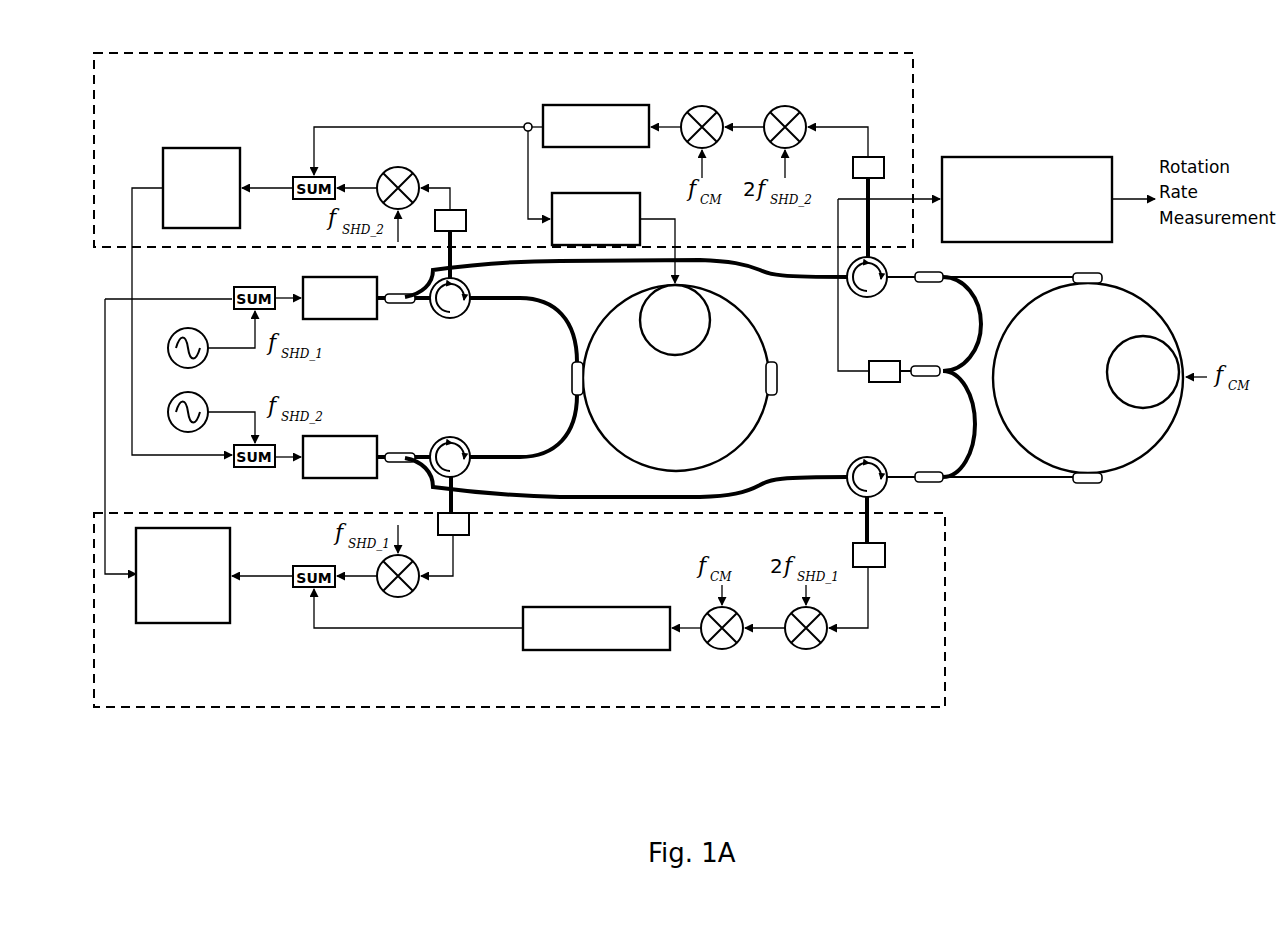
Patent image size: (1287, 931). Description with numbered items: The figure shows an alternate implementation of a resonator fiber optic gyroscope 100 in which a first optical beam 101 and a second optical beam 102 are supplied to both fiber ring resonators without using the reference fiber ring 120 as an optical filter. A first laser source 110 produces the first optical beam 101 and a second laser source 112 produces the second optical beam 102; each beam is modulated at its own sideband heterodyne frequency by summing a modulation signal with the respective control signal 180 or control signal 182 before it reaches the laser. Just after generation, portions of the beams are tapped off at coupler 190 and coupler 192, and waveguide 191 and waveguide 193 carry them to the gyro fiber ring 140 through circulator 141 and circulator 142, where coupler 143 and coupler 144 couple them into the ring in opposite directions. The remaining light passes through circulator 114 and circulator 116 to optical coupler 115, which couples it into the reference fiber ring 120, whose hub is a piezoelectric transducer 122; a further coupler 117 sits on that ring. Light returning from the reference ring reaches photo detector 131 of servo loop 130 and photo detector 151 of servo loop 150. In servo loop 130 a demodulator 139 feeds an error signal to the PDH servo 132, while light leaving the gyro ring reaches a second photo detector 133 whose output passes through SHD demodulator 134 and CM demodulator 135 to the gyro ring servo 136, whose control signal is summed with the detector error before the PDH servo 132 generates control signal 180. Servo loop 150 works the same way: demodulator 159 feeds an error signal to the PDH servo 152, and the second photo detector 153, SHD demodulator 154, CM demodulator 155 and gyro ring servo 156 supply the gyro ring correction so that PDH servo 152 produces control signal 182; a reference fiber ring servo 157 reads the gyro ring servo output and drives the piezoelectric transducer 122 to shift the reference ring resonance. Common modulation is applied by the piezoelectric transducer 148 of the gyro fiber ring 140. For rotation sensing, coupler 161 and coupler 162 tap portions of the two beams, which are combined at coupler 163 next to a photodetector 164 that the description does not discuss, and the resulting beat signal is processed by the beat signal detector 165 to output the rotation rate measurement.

The resonator fiber optic gyroscope 100 is at (1124, 96).
The first optical beam 101 is at (1165, 302).
The second optical beam 102 is at (1140, 435).
The first laser source 110 is at (338, 320).
The second laser source 112 is at (340, 432).
The circulator 114 is at (455, 320).
The optical coupler 115 is at (570, 381).
The circulator 116 is at (455, 440).
The additional optical coupler 117 is at (765, 380).
The reference fiber ring 120 is at (675, 471).
The piezoelectric transducer 122 is at (675, 320).
The servo loop 130 is at (519, 610).
The photo detector 131 is at (470, 525).
The PDH servo 132 is at (232, 553).
The second photo detector 133 is at (886, 555).
The SHD demodulator 134 is at (806, 650).
The CM demodulator 135 is at (722, 650).
The gyro ring servo 136 is at (597, 651).
The demodulator 139 is at (400, 598).
The gyro fiber ring 140 is at (1155, 447).
The circulator 141 is at (878, 298).
The circulator 142 is at (872, 456).
The coupler 143 is at (1090, 272).
The coupler 144 is at (1090, 484).
The piezoelectric transducer 148 is at (1143, 372).
The servo loop 150 is at (503, 150).
The photo detector 151 is at (466, 220).
The PDH servo 152 is at (197, 148).
The second photo detector 153 is at (884, 165).
The SHD demodulator 154 is at (792, 105).
The CM demodulator 155 is at (708, 105).
The gyro ring servo 156 is at (597, 105).
The reference fiber ring servo 157 is at (597, 193).
The demodulator 159 is at (405, 167).
The coupler 161 is at (930, 272).
The coupler 162 is at (925, 484).
The coupler 163 is at (925, 380).
The photodetector 164 is at (880, 360).
The beat signal detector 165 is at (1003, 157).
The control signal 180 is at (105, 497).
The control signal 182 is at (133, 287).
The coupler 190 is at (398, 307).
The waveguide 191 is at (785, 274).
The coupler 192 is at (403, 442).
The waveguide 193 is at (785, 482).